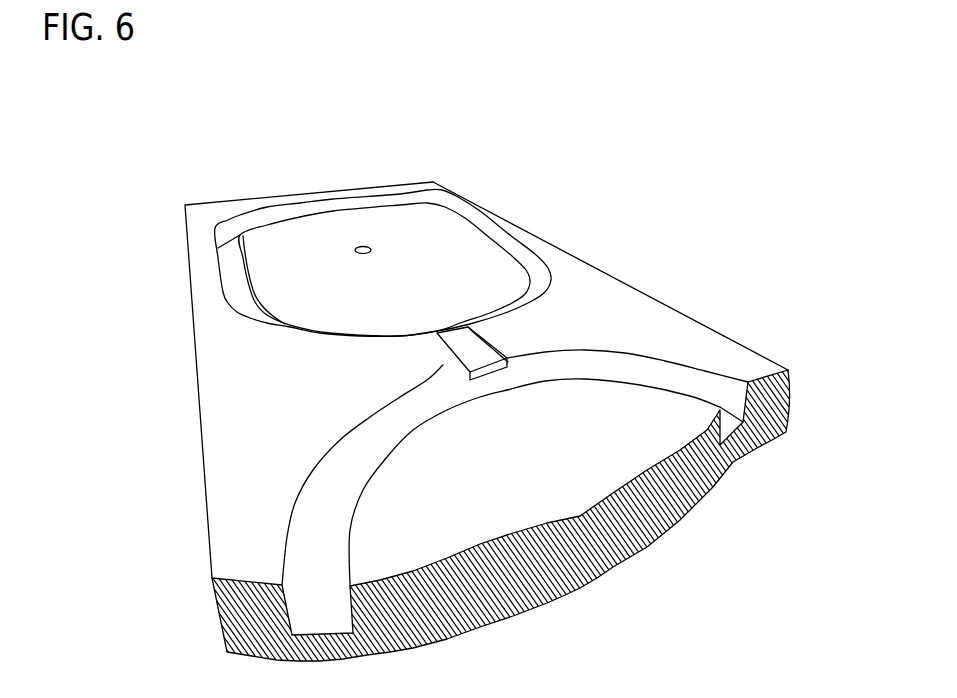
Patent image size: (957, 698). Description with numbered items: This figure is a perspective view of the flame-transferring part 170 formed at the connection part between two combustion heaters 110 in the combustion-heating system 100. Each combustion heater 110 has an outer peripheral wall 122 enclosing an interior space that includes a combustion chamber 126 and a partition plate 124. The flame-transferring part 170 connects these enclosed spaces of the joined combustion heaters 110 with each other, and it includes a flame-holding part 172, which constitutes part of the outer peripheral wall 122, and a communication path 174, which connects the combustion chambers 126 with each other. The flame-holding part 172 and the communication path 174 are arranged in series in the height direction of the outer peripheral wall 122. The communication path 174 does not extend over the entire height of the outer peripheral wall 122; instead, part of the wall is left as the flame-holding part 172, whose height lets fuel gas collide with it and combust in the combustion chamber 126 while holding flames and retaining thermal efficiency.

The combustion-heating system 100 is at (381, 84).
The combustion heater 110 is at (579, 229).
The outer peripheral wall 122 is at (444, 361).
The partition plate 124 is at (400, 221).
The combustion chamber 126 is at (239, 284).
The flame-transferring part 170 is at (557, 395).
The flame-holding part 172 is at (491, 376).
The communication path 174 is at (493, 357).